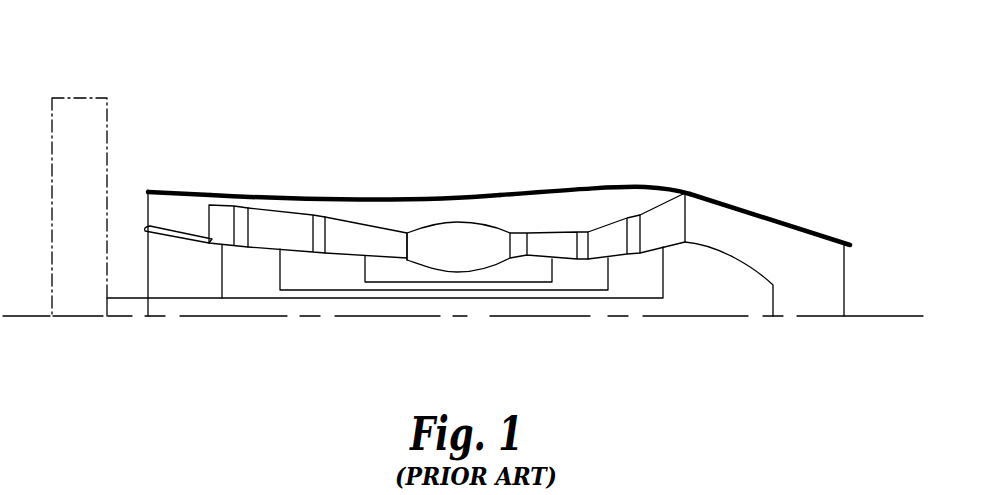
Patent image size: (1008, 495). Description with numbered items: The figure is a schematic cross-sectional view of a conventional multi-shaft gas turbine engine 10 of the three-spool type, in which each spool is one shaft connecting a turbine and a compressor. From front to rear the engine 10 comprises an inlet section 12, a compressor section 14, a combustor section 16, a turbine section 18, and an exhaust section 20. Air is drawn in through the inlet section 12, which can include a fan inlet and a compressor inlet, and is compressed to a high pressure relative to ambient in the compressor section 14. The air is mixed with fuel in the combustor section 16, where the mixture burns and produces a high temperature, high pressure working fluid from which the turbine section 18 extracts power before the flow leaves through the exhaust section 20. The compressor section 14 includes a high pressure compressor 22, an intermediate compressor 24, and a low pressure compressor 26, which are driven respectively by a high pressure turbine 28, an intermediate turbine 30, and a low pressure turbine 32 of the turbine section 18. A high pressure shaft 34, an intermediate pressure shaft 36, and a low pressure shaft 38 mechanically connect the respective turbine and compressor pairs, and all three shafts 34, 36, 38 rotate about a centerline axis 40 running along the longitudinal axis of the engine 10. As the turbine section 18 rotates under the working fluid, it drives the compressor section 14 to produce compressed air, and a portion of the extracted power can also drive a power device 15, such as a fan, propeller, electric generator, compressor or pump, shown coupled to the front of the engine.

The gas turbine engine 10 is at (478, 78).
The inlet section 12 is at (181, 191).
The compressor section 14 is at (322, 178).
The power device 15 is at (80, 128).
The combustor section 16 is at (448, 236).
The turbine section 18 is at (642, 170).
The exhaust section 20 is at (806, 268).
The high pressure compressor 22 is at (368, 236).
The intermediate compressor 24 is at (280, 225).
The low pressure compressor 26 is at (223, 217).
The high pressure turbine 28 is at (557, 236).
The intermediate turbine 30 is at (605, 234).
The low pressure turbine 32 is at (665, 218).
The high pressure shaft 34 is at (518, 283).
The intermediate pressure shaft 36 is at (428, 291).
The low pressure shaft 38 is at (328, 300).
The centerline axis 40 is at (867, 318).